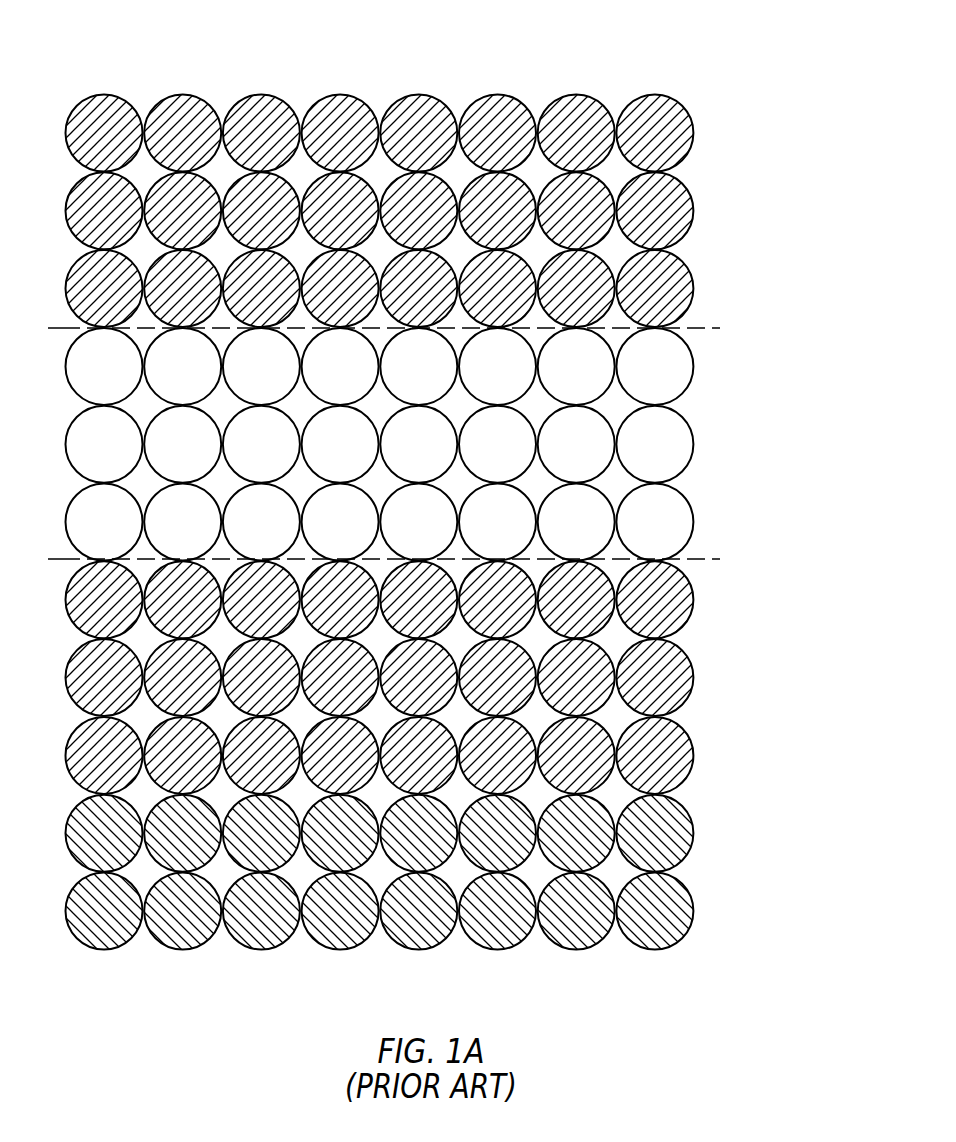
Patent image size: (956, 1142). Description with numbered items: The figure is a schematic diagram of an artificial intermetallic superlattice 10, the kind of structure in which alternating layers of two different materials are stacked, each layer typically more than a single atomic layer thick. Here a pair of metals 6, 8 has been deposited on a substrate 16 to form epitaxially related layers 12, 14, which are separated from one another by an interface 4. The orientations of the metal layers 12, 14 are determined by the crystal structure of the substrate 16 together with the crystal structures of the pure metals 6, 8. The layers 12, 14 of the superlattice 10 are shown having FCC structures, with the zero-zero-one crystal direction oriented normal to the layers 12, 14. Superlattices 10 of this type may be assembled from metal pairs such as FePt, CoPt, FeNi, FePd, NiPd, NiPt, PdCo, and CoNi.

The superlattice 10 is at (240, 72).
The interface 4 is at (58, 327).
The metal 6 is at (695, 132).
The metal 8 is at (694, 360).
The layer 12 is at (694, 600).
The layer 14 is at (479, 444).
The substrate 16 is at (695, 892).